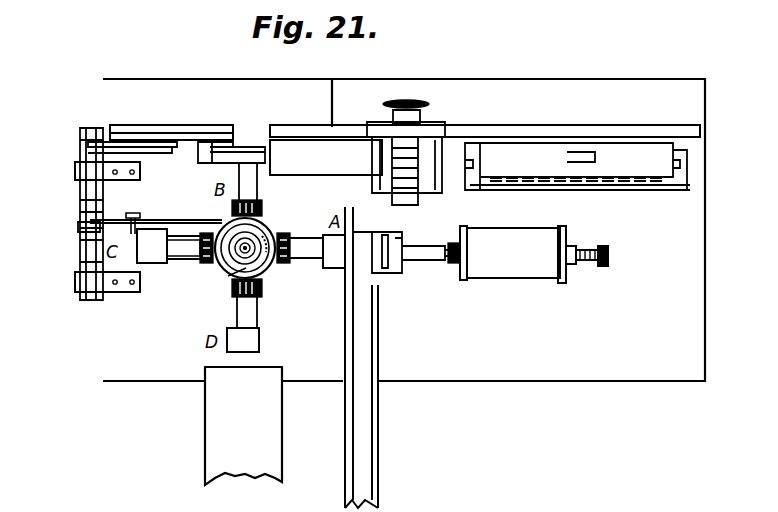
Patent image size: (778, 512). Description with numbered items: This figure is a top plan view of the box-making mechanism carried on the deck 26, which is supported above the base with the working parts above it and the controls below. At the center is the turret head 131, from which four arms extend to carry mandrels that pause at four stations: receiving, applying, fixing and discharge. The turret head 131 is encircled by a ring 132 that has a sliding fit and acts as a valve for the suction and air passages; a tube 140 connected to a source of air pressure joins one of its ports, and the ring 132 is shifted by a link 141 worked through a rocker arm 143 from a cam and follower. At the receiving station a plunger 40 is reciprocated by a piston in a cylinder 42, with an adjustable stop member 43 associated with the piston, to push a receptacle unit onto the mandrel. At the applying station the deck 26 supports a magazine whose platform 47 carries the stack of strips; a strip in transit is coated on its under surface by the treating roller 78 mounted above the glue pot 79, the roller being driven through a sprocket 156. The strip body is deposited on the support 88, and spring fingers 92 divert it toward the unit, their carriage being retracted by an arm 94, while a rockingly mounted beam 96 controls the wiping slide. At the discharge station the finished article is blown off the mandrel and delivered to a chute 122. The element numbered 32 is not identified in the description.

The deck 26 is at (604, 357).
The arm 94 is at (100, 128).
The rockingly mounted beam 96 is at (150, 150).
The rocker arm 143 is at (80, 226).
The link 141 is at (158, 223).
The ring 132 is at (250, 240).
The turret head 131 is at (277, 271).
The tube 140 is at (232, 272).
The spring fingers 92 is at (244, 142).
The vertical bar 32 is at (368, 439).
The plunger 40 is at (392, 237).
The cylinder 42 is at (490, 231).
The adjustable stop member 43 is at (587, 246).
The support 88 is at (322, 160).
The glue pot 79 is at (372, 189).
The treating roller 78 is at (416, 182).
The sprocket 156 is at (410, 105).
The platform 47 is at (645, 186).
The chute 122 is at (278, 432).